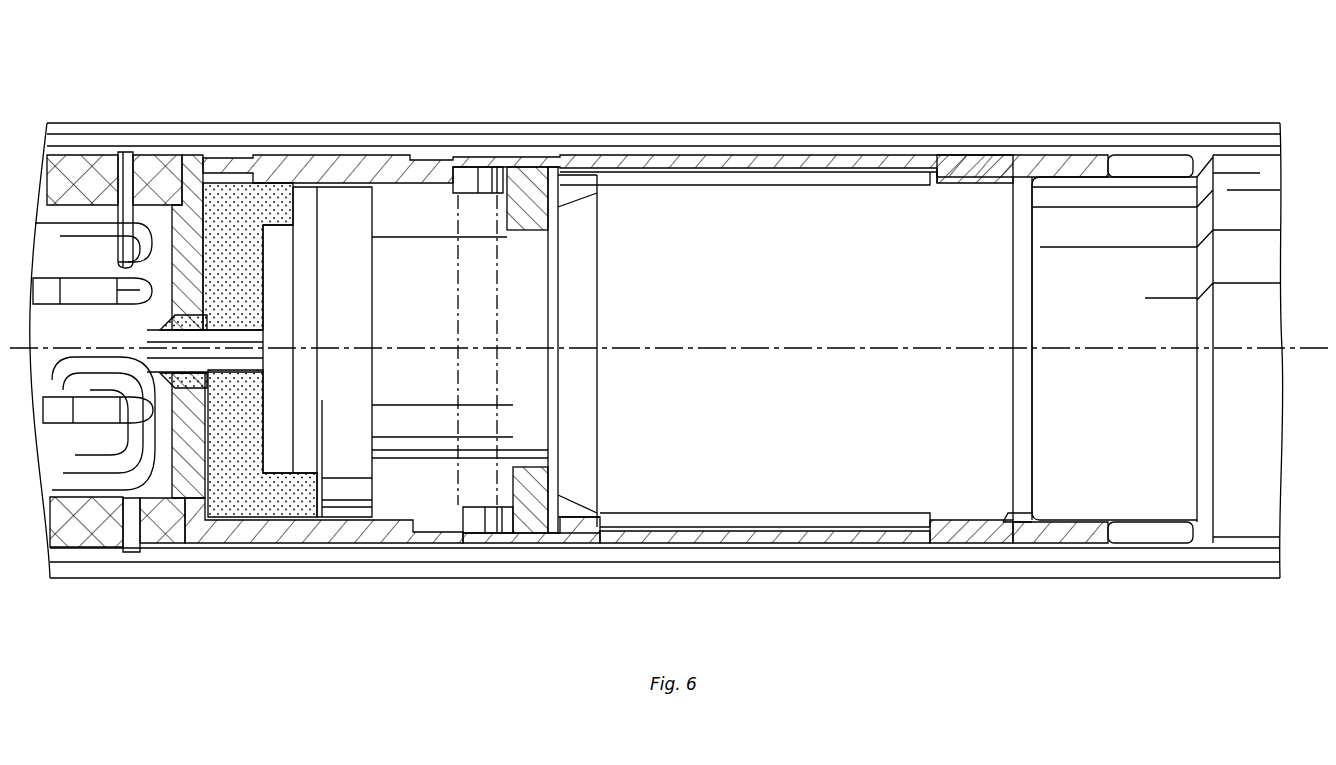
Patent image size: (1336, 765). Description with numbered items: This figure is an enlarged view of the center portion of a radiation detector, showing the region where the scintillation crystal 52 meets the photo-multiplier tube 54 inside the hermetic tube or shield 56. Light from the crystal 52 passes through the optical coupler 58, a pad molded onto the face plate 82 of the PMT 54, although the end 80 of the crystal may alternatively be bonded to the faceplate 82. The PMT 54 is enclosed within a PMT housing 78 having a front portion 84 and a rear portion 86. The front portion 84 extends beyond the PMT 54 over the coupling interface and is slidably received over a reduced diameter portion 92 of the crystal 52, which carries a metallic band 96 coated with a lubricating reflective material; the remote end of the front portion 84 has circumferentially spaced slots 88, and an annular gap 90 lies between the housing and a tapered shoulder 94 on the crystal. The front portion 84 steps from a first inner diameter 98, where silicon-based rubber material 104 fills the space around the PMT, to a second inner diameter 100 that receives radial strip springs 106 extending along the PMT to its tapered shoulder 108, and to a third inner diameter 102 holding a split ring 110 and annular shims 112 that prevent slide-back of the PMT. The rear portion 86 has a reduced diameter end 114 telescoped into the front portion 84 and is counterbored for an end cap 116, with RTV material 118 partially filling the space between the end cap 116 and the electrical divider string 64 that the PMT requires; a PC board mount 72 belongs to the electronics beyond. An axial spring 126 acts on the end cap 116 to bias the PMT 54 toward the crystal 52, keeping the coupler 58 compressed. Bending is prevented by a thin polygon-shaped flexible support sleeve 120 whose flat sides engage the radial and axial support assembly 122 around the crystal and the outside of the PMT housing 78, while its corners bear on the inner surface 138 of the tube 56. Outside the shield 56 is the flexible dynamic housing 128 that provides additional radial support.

The scintillation crystal 52 is at (1257, 217).
The photo-multiplier tube 54 is at (717, 217).
The tube or shield 56 is at (933, 557).
The optical coupler 58 is at (1020, 292).
The electrical divider string 64 is at (348, 207).
The PC board mount 72 is at (657, 550).
The PMT housing 78 is at (527, 550).
The end of the crystal 80 is at (1018, 412).
The face plate 82 is at (1024, 384).
The front portion 84 is at (1022, 540).
The rear portion 86 is at (310, 540).
The circumferentially spaced slots 88 is at (1128, 543).
The annular gap 90 is at (1198, 532).
The reduced diameter portion 92 is at (1072, 200).
The tapered shoulder 94 is at (1227, 517).
The metallic band 96 is at (1147, 173).
The first inner diameter 98 is at (962, 518).
The second inner diameter 100 is at (715, 527).
The third inner diameter 102 is at (443, 520).
The silicon-based rubber material 104 is at (1013, 513).
The radial strip springs 106 is at (840, 540).
The tapered shoulder 108 is at (577, 200).
The split ring 110 is at (527, 173).
The annular shims 112 is at (470, 178).
The reduced diameter end 114 is at (427, 173).
The end cap 116 is at (200, 540).
The RTV material 118 is at (272, 200).
The flexible support sleeve 120 is at (867, 150).
The radial and axial support assembly 122 is at (1255, 537).
The axial spring 126 is at (160, 540).
The flexible dynamic housing 128 is at (1180, 584).
The inner surface 138 is at (873, 548).